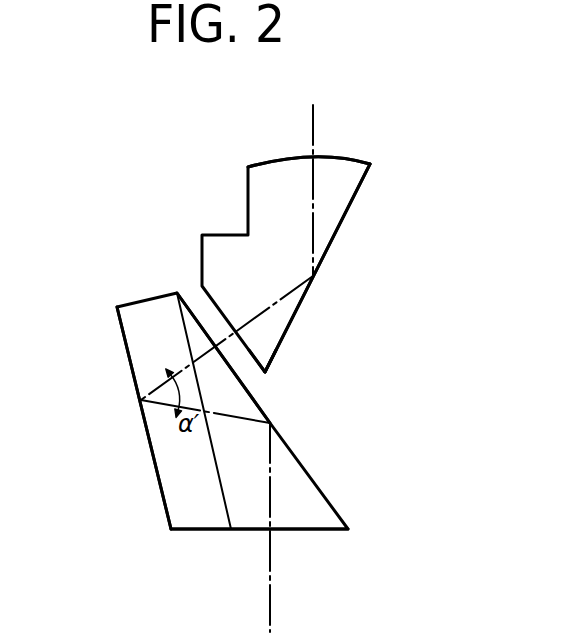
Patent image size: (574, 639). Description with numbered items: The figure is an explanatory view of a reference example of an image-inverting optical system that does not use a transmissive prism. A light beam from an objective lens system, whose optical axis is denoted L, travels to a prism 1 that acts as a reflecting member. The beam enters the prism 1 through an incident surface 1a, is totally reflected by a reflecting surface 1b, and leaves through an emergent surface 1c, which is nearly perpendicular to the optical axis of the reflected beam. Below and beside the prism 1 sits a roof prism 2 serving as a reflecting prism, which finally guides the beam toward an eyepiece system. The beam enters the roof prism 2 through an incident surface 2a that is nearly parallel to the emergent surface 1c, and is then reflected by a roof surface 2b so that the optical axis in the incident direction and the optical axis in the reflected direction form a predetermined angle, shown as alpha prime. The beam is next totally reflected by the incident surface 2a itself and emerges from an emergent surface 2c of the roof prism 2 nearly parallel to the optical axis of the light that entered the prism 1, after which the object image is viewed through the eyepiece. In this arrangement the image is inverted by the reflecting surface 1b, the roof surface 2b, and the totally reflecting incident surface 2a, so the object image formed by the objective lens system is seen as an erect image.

The optical axis L is at (313, 128).
The prism 1 is at (328, 228).
The incident surface 1a is at (355, 158).
The reflecting surface 1b is at (300, 303).
The emergent surface 1c is at (250, 362).
The roof prism 2 is at (310, 488).
The incident surface 2a is at (194, 317).
The roof surface 2b is at (157, 470).
The emergent surface 2c is at (310, 530).